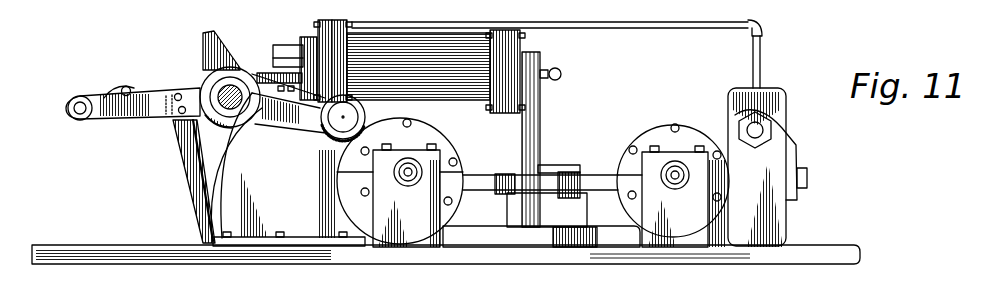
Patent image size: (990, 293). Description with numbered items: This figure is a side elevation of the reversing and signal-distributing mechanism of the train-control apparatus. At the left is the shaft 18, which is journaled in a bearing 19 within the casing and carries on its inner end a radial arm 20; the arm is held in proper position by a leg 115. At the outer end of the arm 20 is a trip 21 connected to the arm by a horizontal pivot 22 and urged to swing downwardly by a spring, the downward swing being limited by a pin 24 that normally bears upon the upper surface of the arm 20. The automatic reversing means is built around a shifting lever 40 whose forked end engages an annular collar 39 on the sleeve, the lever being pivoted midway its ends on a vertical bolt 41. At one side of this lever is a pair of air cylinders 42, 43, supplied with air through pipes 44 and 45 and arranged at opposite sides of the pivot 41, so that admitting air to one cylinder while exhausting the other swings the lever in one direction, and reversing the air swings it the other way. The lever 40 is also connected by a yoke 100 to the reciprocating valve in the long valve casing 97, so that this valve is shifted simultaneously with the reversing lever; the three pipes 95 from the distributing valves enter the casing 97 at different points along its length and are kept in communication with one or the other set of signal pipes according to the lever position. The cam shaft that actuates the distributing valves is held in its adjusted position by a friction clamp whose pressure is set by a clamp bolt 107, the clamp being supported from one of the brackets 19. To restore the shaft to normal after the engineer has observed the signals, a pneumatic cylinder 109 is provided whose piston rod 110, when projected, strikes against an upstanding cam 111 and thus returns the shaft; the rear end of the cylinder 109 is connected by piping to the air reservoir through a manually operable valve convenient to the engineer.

The shaft 18 is at (236, 165).
The bearing 19 is at (288, 194).
The radial arm 20 is at (142, 118).
The trip 21 is at (112, 91).
The horizontal pivot 22 is at (80, 113).
The pin 24 is at (135, 88).
The annular collar 39 is at (233, 66).
The lever 40 is at (263, 67).
The vertical bolt 41 is at (547, 159).
The air cylinder 42 is at (694, 122).
The air cylinder 43 is at (400, 182).
The pipe 44 is at (675, 180).
The pipe 45 is at (409, 183).
The pipe 95 is at (651, 30).
The valve casing 97 is at (778, 96).
The yoke 100 is at (800, 172).
The clamp bolt 107 is at (286, 114).
The pneumatic cylinder 109 is at (432, 92).
The piston rod 110 is at (293, 43).
The upstanding cam 111 is at (212, 40).
The leg 115 is at (196, 190).